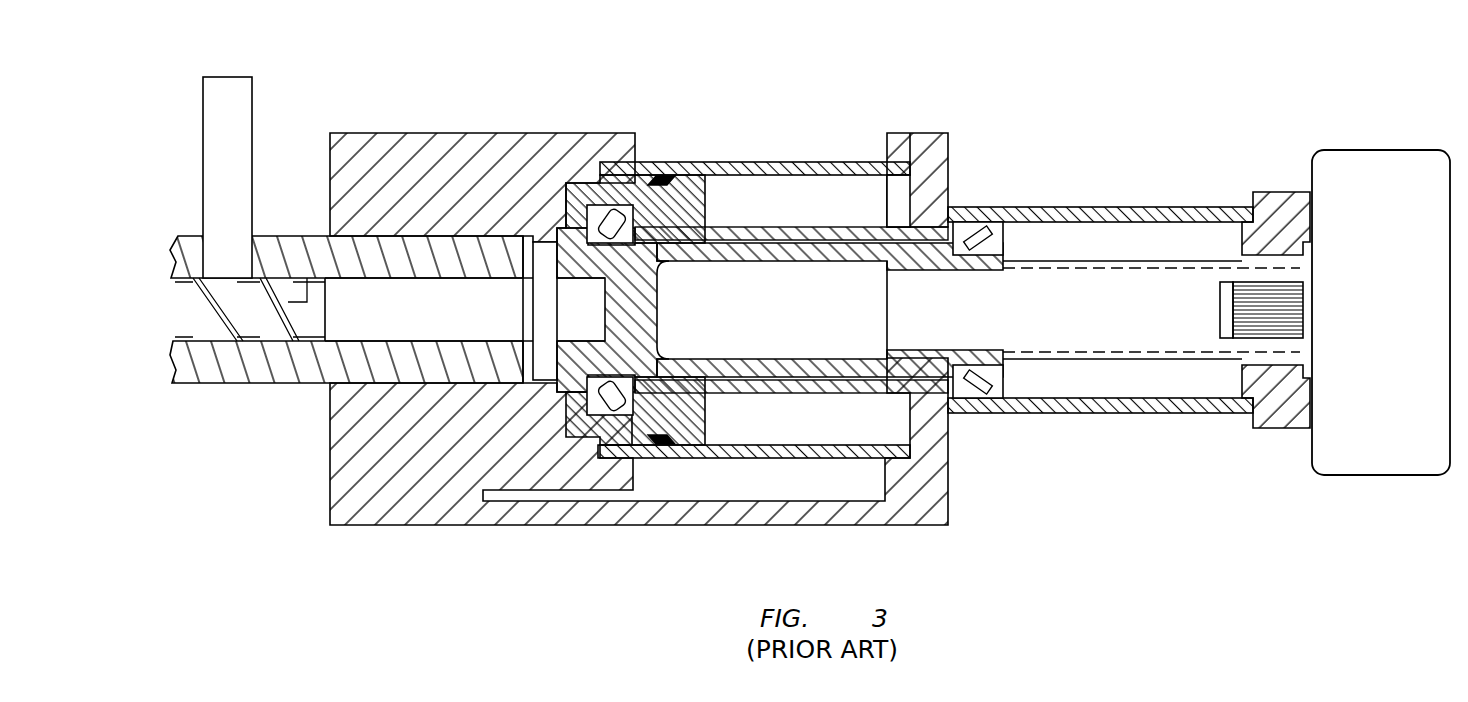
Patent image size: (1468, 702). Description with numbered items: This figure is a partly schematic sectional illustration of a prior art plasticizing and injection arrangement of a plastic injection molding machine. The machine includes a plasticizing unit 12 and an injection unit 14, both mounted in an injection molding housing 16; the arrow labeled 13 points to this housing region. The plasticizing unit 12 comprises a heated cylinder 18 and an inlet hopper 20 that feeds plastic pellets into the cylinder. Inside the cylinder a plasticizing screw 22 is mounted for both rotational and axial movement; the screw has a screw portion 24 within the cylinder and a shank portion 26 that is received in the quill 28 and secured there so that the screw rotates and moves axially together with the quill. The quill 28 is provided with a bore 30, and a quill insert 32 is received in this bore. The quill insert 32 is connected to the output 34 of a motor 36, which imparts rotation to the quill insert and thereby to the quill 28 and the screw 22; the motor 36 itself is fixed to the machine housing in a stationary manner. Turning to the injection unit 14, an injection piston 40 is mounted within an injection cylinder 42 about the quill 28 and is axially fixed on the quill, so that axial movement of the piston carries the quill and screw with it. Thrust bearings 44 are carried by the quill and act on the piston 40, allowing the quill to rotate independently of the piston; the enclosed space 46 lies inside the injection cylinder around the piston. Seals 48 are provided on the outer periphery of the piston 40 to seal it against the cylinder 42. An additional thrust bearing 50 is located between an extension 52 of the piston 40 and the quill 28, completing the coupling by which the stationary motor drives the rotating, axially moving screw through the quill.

The plasticizing unit 12 is at (727, 92).
The housing block 13 is at (383, 118).
The injection unit 14 is at (1080, 150).
The injection molding housing 16 is at (538, 135).
The heated cylinder 18 is at (300, 372).
The inlet hopper 20 is at (245, 83).
The plasticizing screw 22 is at (445, 297).
The screw portion 24 is at (200, 327).
The shank portion 26 is at (588, 322).
The quill 28 is at (857, 250).
The bore 30 is at (785, 332).
The quill insert 32 is at (1142, 290).
The output 34 is at (1262, 325).
The motor 36 is at (1380, 162).
The injection piston 40 is at (697, 190).
The injection cylinder 42 is at (797, 163).
The thrust bearings 44 is at (612, 218).
The cavity 46 is at (785, 219).
The seals 48 is at (660, 178).
The additional thrust bearing 50 is at (998, 232).
The extension 52 is at (972, 210).